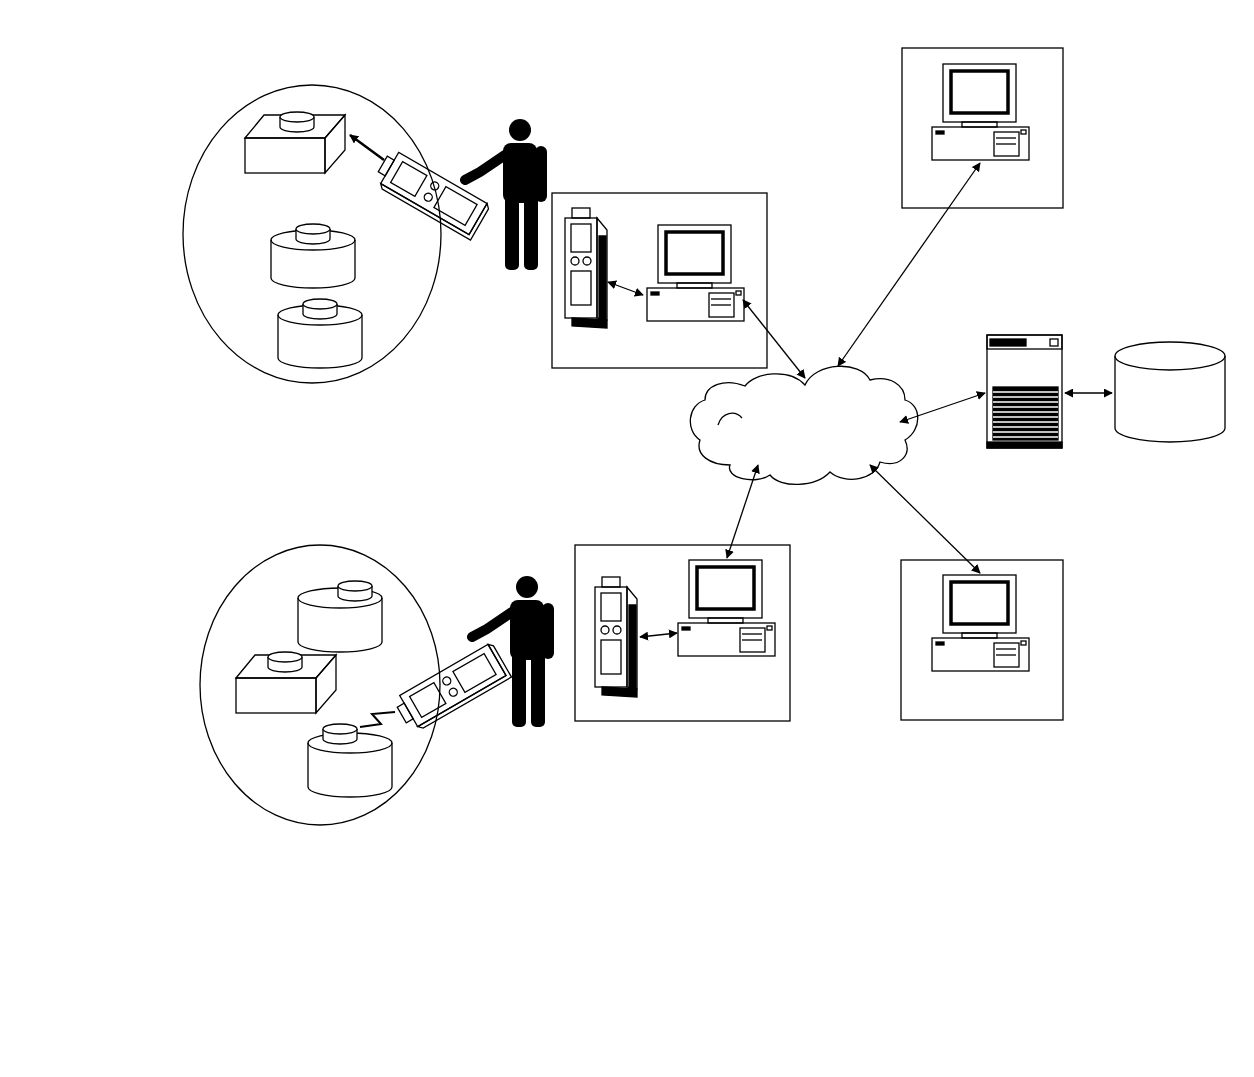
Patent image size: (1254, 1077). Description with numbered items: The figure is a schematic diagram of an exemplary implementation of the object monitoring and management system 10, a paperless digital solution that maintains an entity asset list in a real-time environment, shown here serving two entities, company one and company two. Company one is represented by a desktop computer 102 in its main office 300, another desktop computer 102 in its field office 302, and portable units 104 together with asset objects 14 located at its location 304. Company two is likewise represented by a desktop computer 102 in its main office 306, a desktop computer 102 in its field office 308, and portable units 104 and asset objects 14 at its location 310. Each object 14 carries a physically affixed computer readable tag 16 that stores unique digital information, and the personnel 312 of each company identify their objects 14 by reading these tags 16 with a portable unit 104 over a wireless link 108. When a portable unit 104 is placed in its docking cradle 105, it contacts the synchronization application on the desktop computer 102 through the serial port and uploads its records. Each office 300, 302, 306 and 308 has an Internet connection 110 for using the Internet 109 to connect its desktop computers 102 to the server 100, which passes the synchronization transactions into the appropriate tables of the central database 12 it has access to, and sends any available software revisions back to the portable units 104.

The object monitoring and management system 10 is at (687, 86).
The database 12 is at (1170, 340).
The asset objects 14 is at (255, 147).
The computer readable tag 16 is at (298, 110).
The server 100 is at (1025, 335).
The desktop computer 102 is at (672, 225).
The portable unit 104 is at (588, 212).
The docking cradle 105 is at (600, 327).
The wireless link 108 is at (362, 125).
The Internet 109 is at (742, 418).
The Internet connection 110 is at (785, 340).
The main office 300 is at (1045, 703).
The field office 302 is at (598, 552).
The location 304 is at (295, 562).
The main office 306 is at (1045, 65).
The field office 308 is at (567, 360).
The location 310 is at (230, 323).
The personnel 312 is at (537, 147).